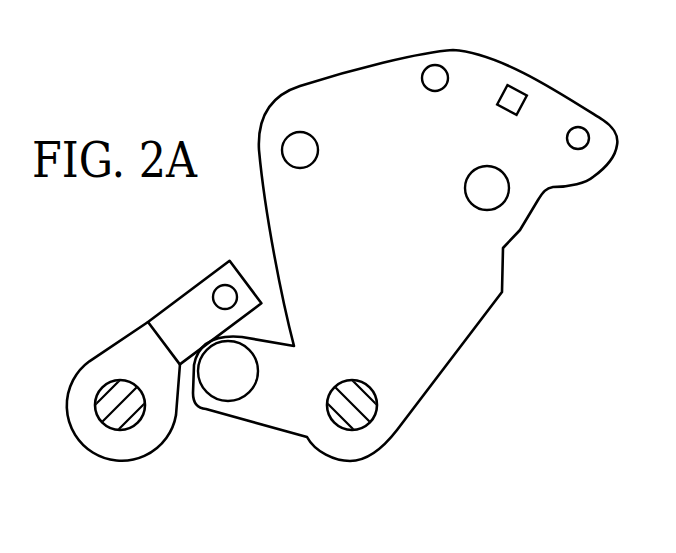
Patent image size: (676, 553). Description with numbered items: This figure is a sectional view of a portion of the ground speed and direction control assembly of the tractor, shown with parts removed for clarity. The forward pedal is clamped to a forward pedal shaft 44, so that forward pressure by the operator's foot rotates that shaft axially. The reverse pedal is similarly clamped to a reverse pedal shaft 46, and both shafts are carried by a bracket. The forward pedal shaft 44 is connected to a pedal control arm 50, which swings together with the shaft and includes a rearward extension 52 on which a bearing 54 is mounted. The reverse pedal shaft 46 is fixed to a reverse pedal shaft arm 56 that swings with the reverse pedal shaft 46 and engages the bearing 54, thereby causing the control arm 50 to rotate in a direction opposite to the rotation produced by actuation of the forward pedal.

The forward pedal shaft 44 is at (368, 420).
The reverse pedal shaft 46 is at (120, 422).
The pedal control arm 50 is at (483, 268).
The rearward extension 52 is at (236, 416).
The bearing 54 is at (148, 322).
The reverse pedal shaft arm 56 is at (197, 285).